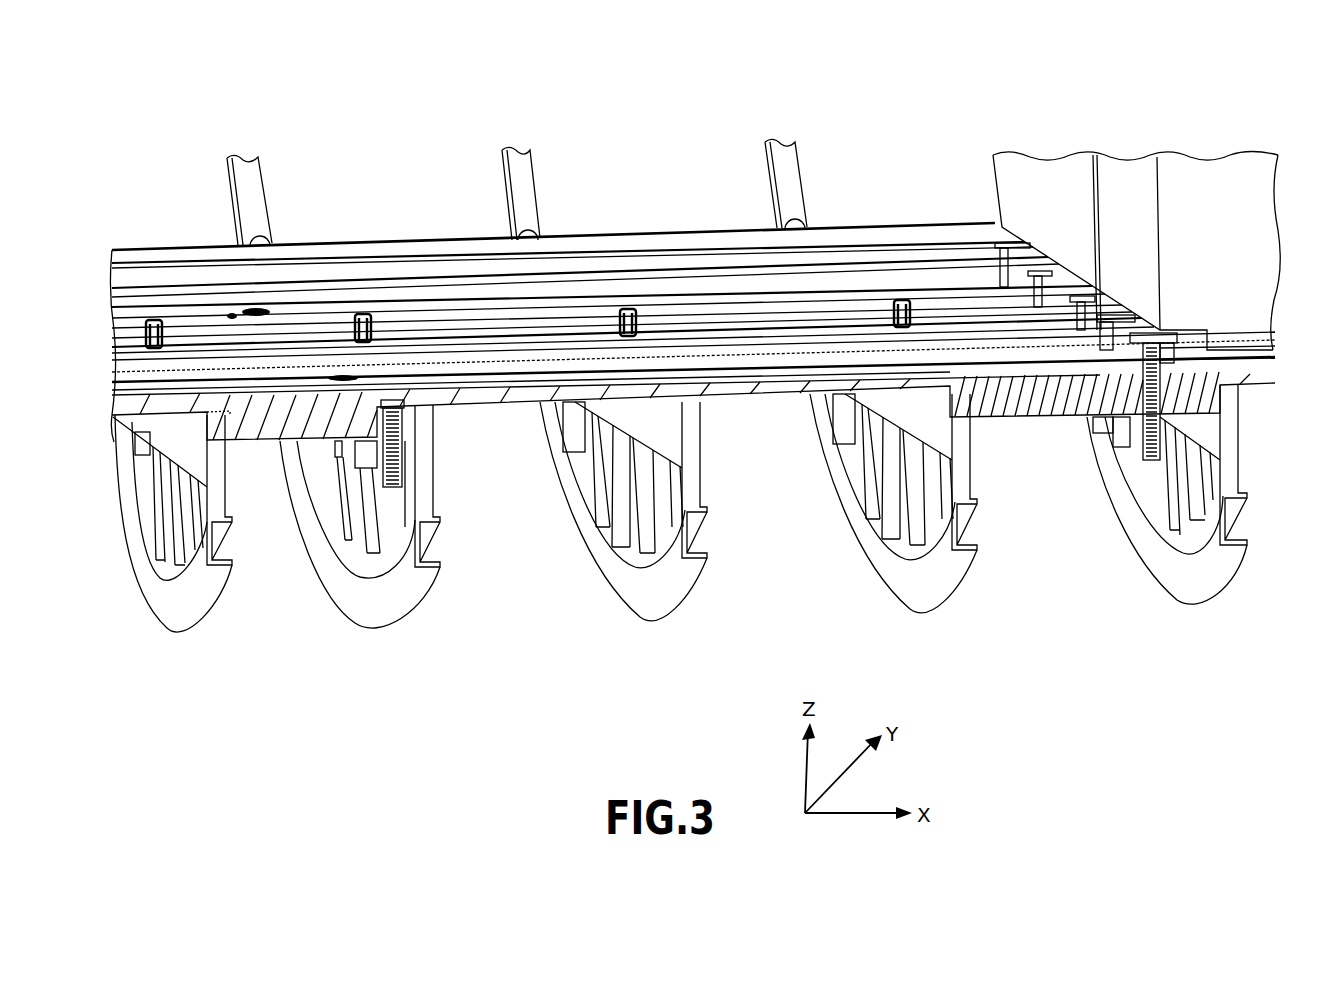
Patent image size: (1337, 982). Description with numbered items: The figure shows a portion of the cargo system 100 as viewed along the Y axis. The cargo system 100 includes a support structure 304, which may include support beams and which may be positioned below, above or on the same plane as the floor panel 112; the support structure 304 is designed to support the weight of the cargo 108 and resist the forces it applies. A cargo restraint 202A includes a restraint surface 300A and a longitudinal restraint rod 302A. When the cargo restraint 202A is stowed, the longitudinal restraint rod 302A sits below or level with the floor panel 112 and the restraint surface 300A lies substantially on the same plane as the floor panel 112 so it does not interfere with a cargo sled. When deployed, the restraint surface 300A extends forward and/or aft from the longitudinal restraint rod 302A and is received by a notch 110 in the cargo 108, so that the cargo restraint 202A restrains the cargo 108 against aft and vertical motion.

The cargo system 100 is at (434, 118).
The cargo 108 is at (1245, 183).
The notch 110 is at (1150, 340).
The floor panel 112 is at (736, 400).
The cargo restraint 202A is at (1180, 332).
The restraint surface 300A is at (1133, 340).
The longitudinal restraint rod 302A is at (1165, 345).
The support structure 304 is at (1172, 352).